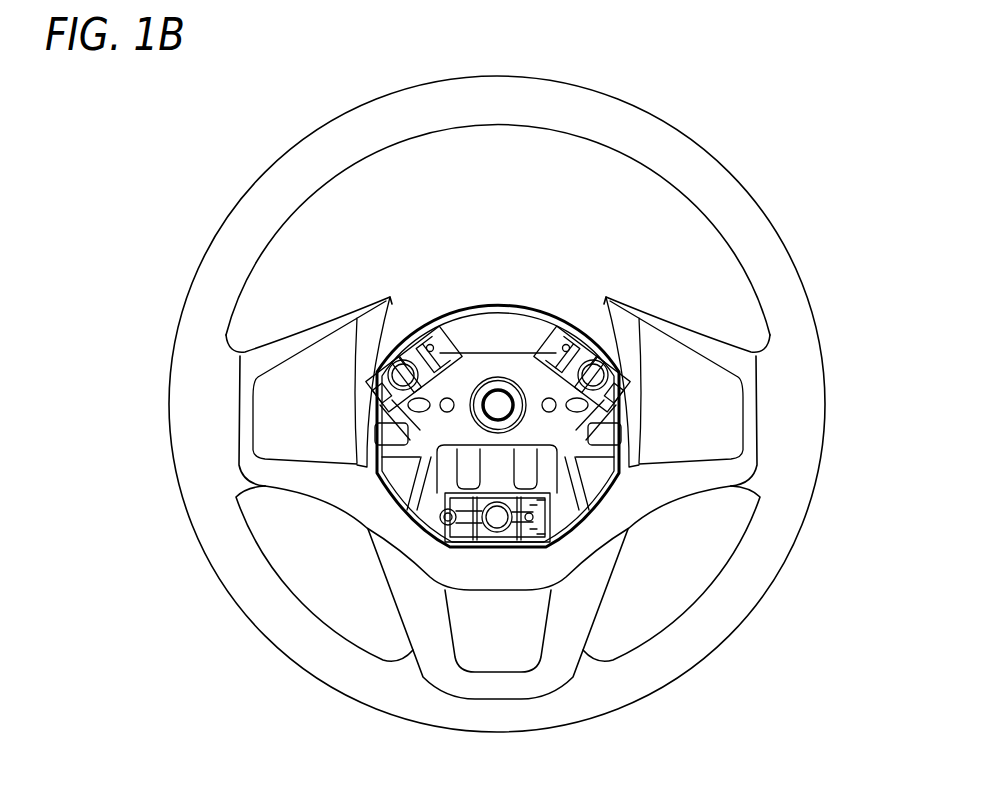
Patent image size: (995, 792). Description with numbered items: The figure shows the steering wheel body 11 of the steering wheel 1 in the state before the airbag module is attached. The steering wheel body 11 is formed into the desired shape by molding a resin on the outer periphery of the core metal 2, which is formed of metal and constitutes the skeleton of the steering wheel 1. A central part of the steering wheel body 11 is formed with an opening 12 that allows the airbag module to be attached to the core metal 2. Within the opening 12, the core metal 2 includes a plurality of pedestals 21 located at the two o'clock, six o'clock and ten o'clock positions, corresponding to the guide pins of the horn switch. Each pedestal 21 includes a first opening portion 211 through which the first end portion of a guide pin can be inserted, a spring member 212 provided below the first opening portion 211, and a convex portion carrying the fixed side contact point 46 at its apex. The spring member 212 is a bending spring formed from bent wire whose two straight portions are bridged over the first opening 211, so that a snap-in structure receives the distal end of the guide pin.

The steering wheel 1 is at (517, 404).
The steering wheel body 11 is at (812, 408).
The opening 12 is at (497, 301).
The core metal 2 is at (498, 362).
The pedestal 21 is at (499, 445).
The first opening portion 211 is at (382, 380).
The spring member 212 is at (405, 343).
The fixed side contact point 46 is at (430, 353).